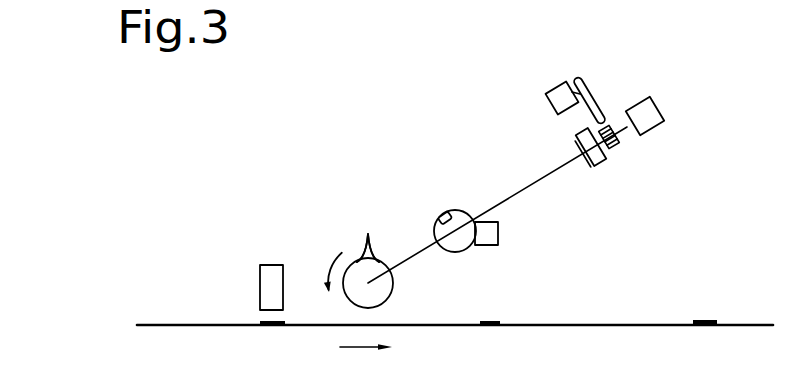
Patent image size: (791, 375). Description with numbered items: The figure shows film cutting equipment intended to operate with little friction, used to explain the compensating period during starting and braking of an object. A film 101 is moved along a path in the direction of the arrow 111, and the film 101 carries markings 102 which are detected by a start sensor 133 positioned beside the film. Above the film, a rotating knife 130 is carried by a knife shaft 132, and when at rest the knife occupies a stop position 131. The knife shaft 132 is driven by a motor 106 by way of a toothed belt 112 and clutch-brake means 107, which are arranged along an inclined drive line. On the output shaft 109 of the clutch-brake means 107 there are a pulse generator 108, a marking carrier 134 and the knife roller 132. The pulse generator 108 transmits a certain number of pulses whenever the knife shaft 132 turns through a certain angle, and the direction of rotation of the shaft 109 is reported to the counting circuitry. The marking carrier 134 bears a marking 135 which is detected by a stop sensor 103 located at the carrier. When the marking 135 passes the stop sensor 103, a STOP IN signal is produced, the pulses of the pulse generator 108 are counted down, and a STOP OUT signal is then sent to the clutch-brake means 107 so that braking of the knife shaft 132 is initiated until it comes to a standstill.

The film 101 is at (192, 327).
The markings 102 is at (272, 327).
The stop sensor 103 is at (488, 234).
The motor 106 is at (558, 92).
The clutch-brake means 107 is at (598, 157).
The pulse generator 108 is at (655, 117).
The shaft 109 is at (556, 173).
The arrow 111 is at (394, 352).
The toothed belt 112 is at (603, 95).
The rotating knife 130 is at (350, 238).
The stop position 131 is at (368, 212).
The knife shaft 132 is at (378, 290).
The start sensor 133 is at (275, 283).
The marking carrier 134 is at (468, 245).
The marking 135 is at (445, 208).